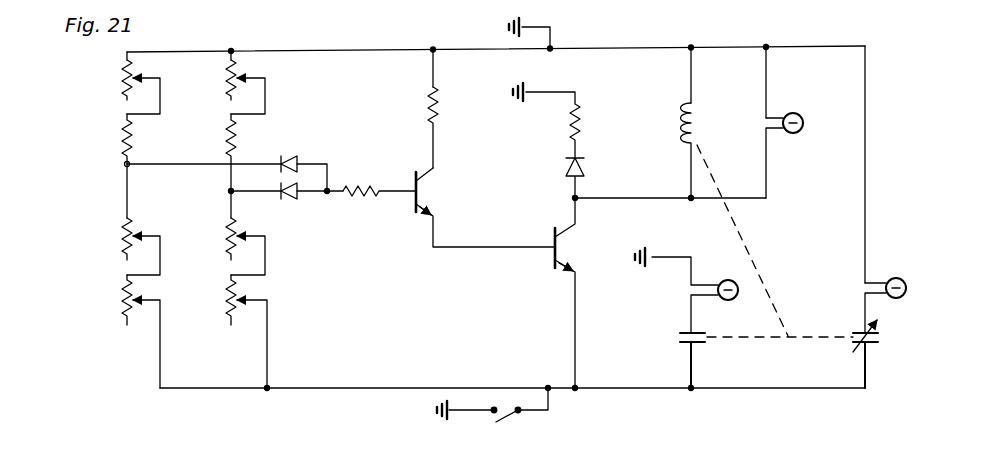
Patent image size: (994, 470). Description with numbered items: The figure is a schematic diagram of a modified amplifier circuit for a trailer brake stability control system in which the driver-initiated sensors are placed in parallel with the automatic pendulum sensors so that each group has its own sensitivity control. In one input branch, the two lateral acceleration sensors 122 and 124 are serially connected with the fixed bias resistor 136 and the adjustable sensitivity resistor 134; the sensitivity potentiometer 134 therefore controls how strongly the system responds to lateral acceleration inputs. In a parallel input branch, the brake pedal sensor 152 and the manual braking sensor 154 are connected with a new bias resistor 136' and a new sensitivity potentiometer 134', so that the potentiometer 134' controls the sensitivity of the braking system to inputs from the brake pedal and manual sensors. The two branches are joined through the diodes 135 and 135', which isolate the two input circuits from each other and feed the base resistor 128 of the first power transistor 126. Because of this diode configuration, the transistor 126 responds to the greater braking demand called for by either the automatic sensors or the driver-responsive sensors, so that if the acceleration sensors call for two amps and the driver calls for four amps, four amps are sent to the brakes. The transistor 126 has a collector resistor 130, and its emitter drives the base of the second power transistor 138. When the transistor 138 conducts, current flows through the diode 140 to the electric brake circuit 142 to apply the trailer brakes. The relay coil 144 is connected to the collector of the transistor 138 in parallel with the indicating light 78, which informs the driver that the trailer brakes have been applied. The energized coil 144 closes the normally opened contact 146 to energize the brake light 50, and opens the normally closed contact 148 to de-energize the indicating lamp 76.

The sensitivity potentiometer 134' is at (102, 88).
The adjustable sensitivity resistor 134 is at (218, 88).
The bias resistor 136' is at (95, 166).
The fixed bias resistor 136 is at (199, 166).
The manual braking sensor 154 is at (123, 238).
The brake pedal sensor 152 is at (122, 302).
The adjustable potentiometer resistor 124 is at (226, 235).
The adjustable potentiometer resistor 122 is at (226, 302).
The diode 135' is at (235, 146).
The diode 135 is at (287, 211).
The base resistor 128 is at (362, 182).
The collector resistor 130 is at (446, 105).
The first power transistor 126 is at (404, 224).
The second power transistor 138 is at (543, 268).
The electric brake circuit 142 is at (587, 120).
The diode 140 is at (563, 172).
The relay coil 144 is at (700, 115).
The indicating light 78 is at (805, 130).
The brake light 50 is at (730, 276).
The indicating lamp 76 is at (902, 274).
The normally opened contact 146 is at (682, 338).
The normally closed contact 148 is at (858, 340).